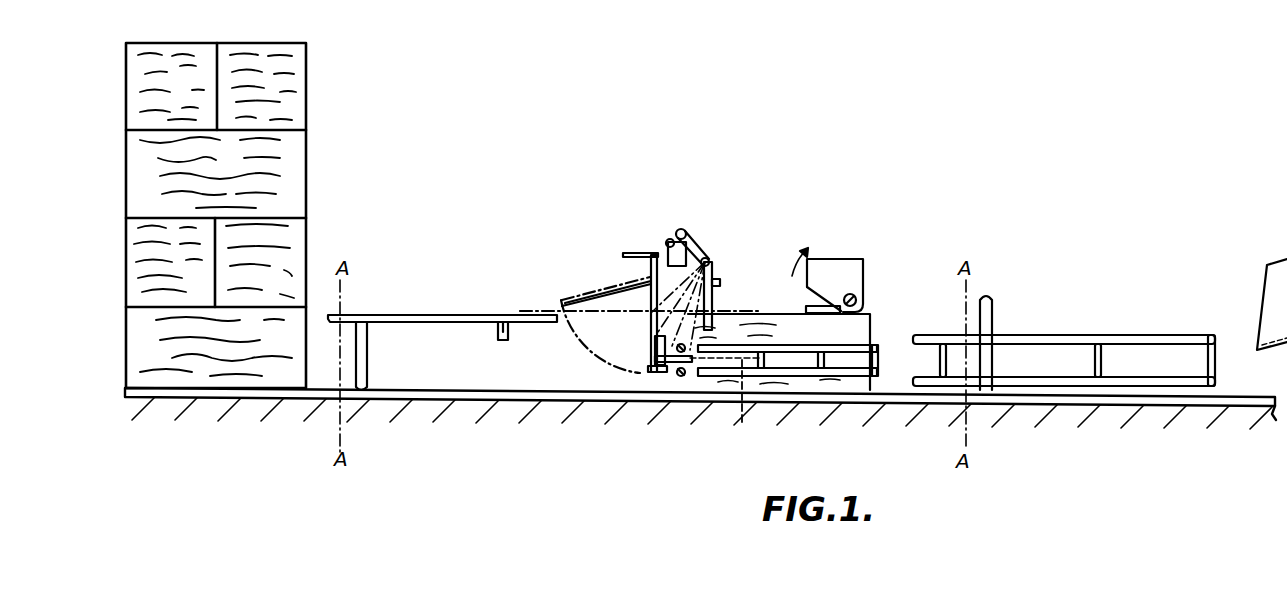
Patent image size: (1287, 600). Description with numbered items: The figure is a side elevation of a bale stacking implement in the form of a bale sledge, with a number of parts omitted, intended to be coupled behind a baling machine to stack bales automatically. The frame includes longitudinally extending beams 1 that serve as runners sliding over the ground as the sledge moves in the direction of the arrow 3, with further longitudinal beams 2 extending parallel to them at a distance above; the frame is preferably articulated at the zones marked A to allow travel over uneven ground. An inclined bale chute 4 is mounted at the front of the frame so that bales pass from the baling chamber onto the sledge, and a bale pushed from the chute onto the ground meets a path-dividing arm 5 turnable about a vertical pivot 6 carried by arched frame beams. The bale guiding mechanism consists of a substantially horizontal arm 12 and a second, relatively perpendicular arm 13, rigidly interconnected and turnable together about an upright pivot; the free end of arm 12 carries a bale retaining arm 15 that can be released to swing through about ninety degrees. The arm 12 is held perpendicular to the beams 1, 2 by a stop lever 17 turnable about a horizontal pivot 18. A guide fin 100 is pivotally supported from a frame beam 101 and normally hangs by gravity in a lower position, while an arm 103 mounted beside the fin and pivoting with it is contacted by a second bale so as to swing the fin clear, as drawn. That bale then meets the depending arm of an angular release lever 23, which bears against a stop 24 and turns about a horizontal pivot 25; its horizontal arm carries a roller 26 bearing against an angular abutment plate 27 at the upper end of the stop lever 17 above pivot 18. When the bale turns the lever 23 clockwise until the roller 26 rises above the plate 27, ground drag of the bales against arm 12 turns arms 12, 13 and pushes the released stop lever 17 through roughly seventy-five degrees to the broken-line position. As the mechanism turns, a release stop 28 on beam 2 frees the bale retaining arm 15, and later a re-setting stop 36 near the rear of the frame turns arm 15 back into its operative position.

The longitudinally extending beam 1 is at (1115, 398).
The further longitudinal beam 2 is at (400, 316).
The direction of travel 3 is at (812, 209).
The inclined bale chute 4 is at (1272, 300).
The path-dividing arm 5 is at (1140, 378).
The vertical pivot 6 is at (990, 317).
The substantially horizontally extending arm 12 is at (657, 364).
The second substantially horizontal arm 13 is at (785, 372).
The bale retaining arm 15 is at (738, 402).
The stop lever 17 is at (576, 297).
The horizontal pivot 18 is at (650, 277).
The angular release lever 23 is at (718, 267).
The stop 24 is at (720, 284).
The horizontal pivot 25 is at (714, 258).
The roller 26 is at (663, 254).
The angular abutment plate 27 is at (646, 253).
The release stop 28 is at (498, 330).
The re-setting stop 36 is at (362, 360).
The guide fin 100 is at (853, 265).
The frame beam 101 is at (856, 300).
The arm 103 is at (815, 305).